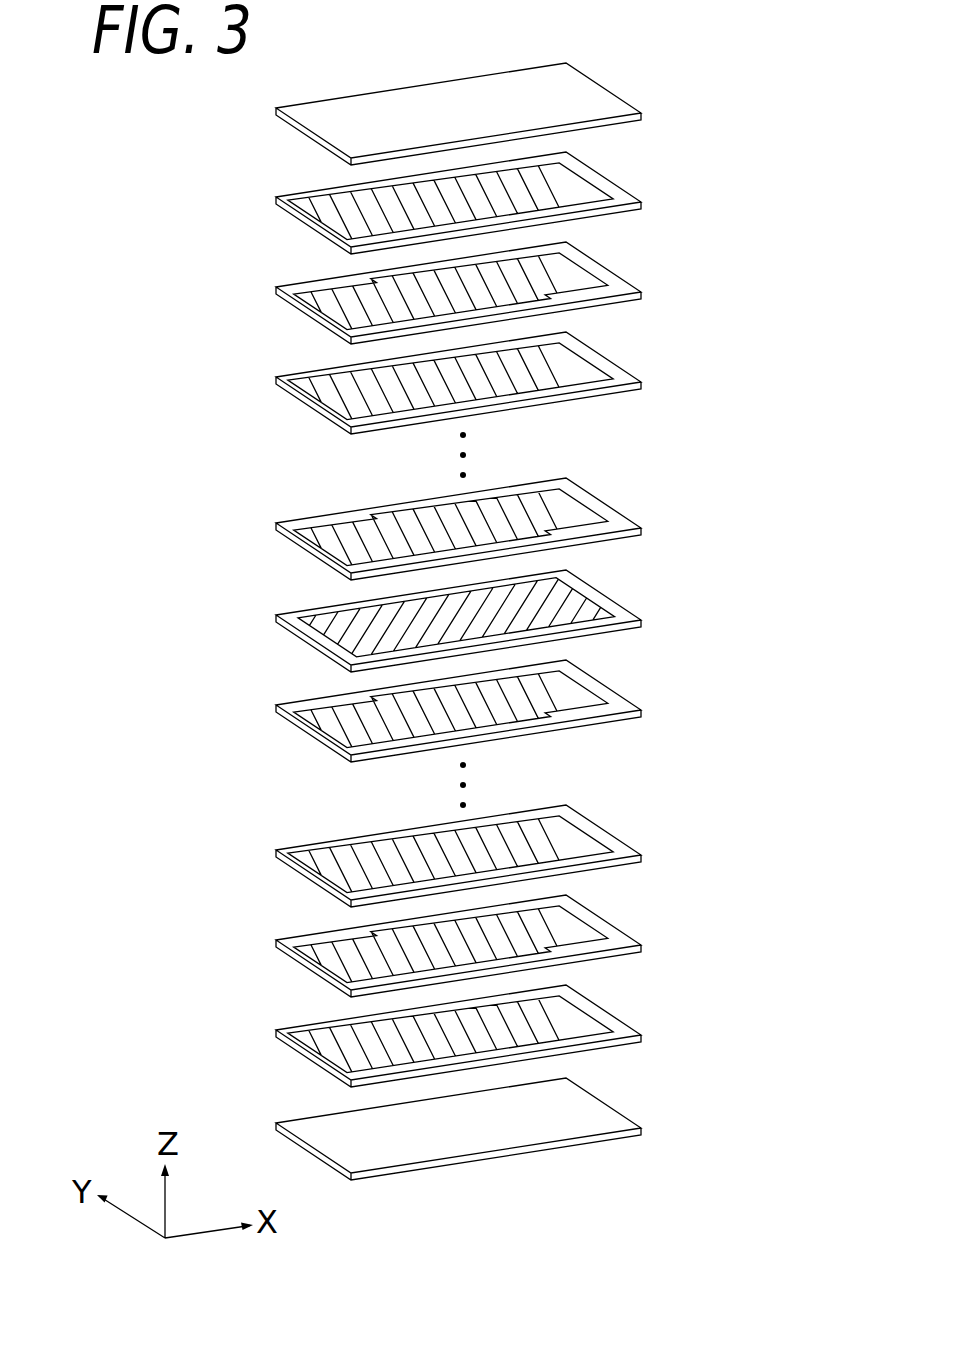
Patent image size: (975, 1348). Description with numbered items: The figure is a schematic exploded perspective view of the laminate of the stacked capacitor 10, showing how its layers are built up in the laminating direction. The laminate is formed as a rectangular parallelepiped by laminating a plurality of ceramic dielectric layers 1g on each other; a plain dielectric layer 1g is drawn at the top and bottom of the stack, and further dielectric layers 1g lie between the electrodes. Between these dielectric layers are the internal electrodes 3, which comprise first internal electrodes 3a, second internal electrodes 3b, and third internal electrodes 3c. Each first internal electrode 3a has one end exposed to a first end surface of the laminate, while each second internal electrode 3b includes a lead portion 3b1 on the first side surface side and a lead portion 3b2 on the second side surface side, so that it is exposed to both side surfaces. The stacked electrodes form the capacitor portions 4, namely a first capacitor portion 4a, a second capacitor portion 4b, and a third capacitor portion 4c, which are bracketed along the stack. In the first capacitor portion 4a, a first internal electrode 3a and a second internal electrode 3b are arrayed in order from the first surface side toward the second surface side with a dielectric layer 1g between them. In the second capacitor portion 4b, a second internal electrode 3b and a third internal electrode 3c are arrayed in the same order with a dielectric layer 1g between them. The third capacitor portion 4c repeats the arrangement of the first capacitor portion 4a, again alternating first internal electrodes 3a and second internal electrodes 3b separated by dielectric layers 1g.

The stacked capacitor 10 is at (158, 163).
The dielectric layer 1g is at (345, 132).
The internal electrodes 3 is at (200, 397).
The first internal electrode 3a is at (337, 218).
The second internal electrode 3b is at (417, 619).
The lead portion 3b1 is at (417, 724).
The lead portion 3b2 is at (420, 692).
The third internal electrode 3c is at (335, 628).
The capacitor portions 4 is at (748, 267).
The first capacitor portion 4a is at (655, 145).
The second capacitor portion 4b is at (655, 475).
The third capacitor portion 4c is at (655, 803).